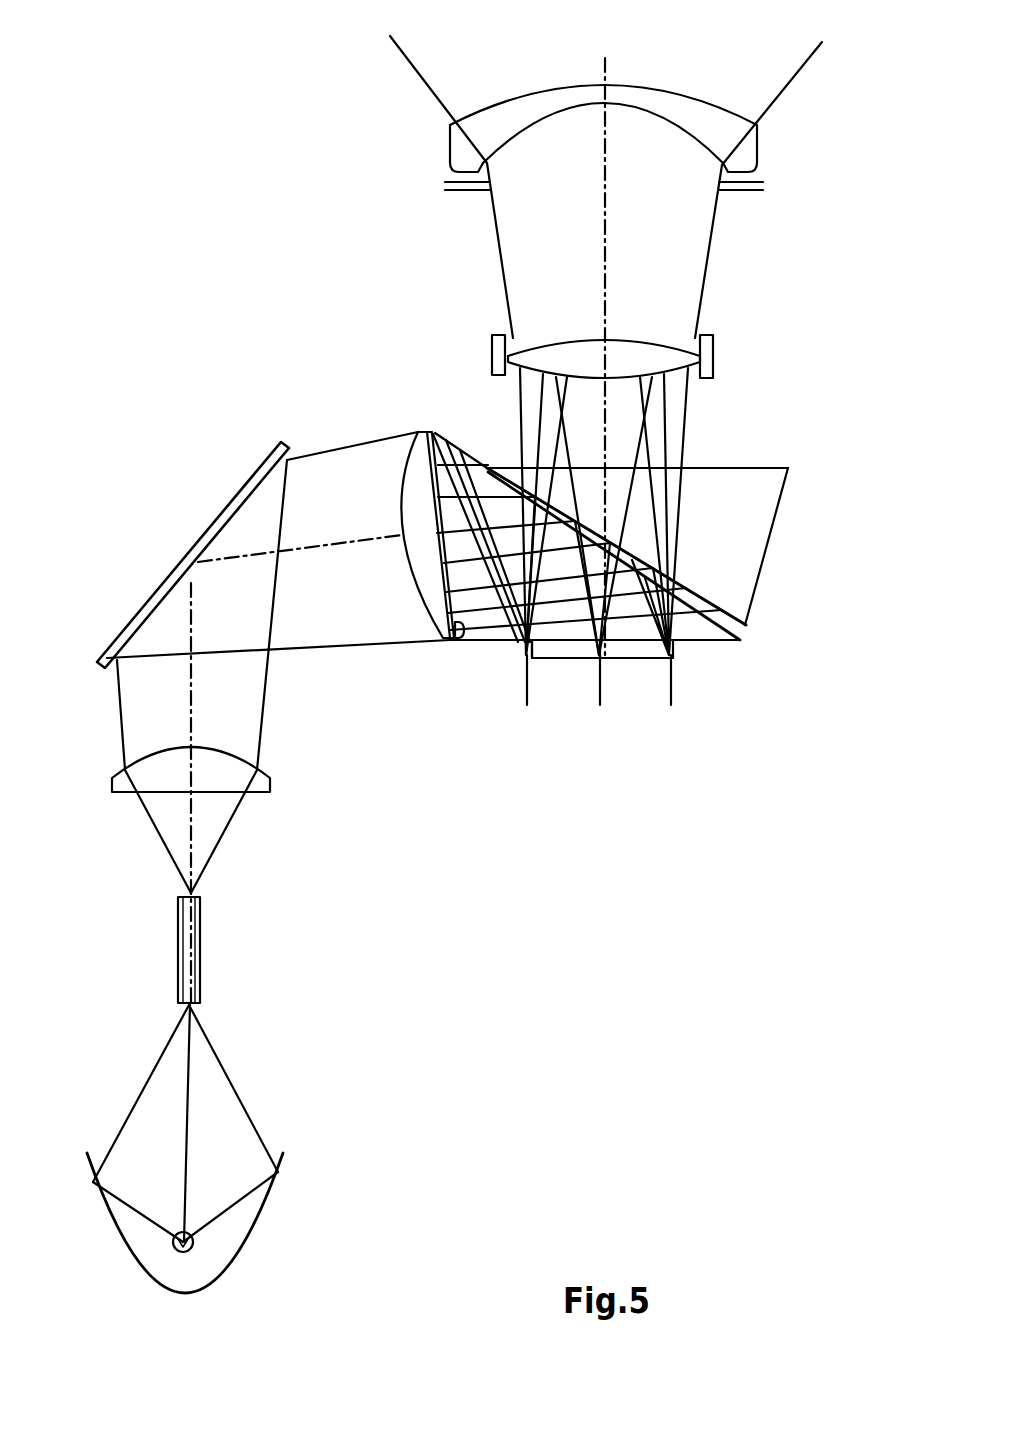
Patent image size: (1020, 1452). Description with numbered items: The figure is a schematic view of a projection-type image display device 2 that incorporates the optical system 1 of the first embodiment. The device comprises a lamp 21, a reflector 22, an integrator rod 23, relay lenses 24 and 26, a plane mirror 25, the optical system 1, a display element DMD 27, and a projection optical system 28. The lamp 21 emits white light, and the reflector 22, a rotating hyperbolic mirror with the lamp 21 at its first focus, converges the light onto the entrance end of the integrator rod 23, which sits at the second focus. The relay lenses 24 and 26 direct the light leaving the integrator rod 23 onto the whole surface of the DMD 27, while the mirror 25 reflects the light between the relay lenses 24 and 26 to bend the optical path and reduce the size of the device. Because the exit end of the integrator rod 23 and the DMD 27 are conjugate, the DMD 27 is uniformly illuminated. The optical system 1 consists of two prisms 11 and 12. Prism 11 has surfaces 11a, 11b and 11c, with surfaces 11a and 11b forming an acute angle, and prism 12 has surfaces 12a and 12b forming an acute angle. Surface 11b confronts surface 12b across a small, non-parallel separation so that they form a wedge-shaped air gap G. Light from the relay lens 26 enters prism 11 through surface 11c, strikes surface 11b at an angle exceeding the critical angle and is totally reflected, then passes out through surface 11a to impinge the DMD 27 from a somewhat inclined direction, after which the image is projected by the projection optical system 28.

The optical system 1 is at (807, 432).
The projection-type image display device 2 is at (486, 1203).
The prism 11 is at (498, 632).
The surface 11a is at (558, 642).
The surface 11b is at (709, 643).
The surface 11c is at (461, 640).
The prism 12 is at (757, 523).
The surface 12a is at (757, 468).
The surface 12b is at (718, 604).
The lamp 21 is at (198, 1248).
The reflector 22 is at (268, 1217).
The integrator rod 23 is at (200, 943).
The relay lens 24 is at (272, 783).
The plane mirror 25 is at (198, 548).
The relay lens 26 is at (443, 642).
The display element DMD 27 is at (640, 658).
The projection optical system 28 is at (432, 105).
The air gap G is at (742, 628).